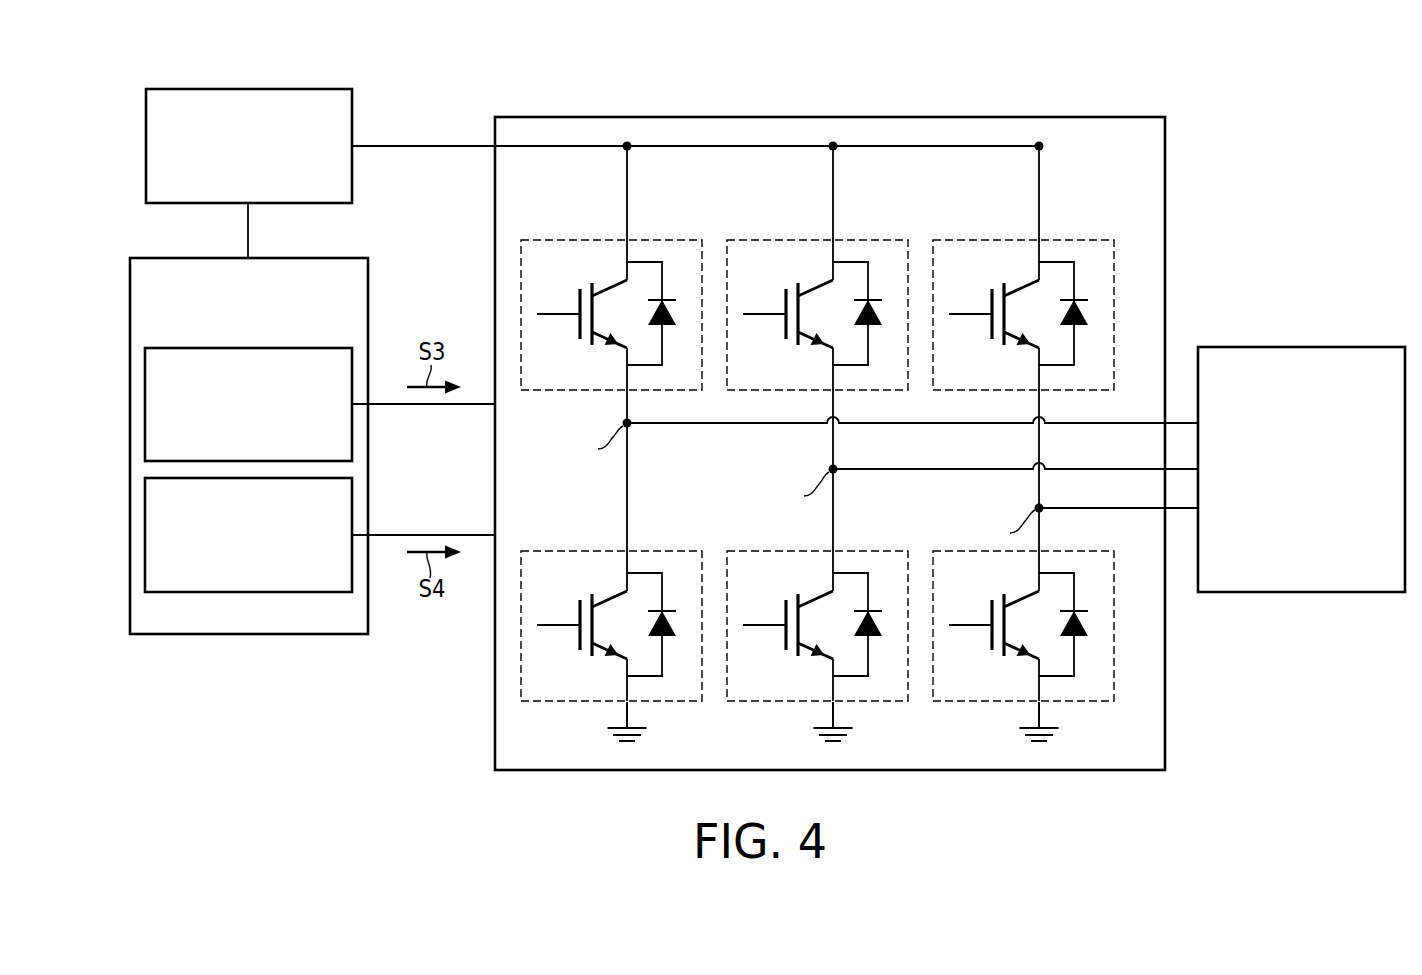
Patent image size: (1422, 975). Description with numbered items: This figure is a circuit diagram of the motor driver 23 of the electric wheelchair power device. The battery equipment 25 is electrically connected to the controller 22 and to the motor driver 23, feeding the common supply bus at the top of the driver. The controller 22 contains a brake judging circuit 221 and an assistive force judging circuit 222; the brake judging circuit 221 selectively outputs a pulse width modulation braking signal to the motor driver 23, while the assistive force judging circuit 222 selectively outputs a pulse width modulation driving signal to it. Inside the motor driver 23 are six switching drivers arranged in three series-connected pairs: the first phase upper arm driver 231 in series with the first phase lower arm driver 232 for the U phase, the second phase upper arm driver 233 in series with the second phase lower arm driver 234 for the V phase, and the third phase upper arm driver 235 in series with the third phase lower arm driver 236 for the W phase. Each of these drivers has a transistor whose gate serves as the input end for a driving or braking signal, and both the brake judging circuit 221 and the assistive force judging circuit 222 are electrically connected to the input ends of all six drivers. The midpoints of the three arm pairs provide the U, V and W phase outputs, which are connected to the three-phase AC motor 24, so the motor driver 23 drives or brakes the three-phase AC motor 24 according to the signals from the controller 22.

The controller 22 is at (165, 258).
The brake judging circuit 221 is at (182, 348).
The assistive force judging circuit 222 is at (181, 592).
The motor driver 23 is at (1165, 152).
The first phase upper arm driver 231 is at (551, 238).
The first phase lower arm driver 232 is at (550, 704).
The second phase upper arm driver 233 is at (757, 238).
The second phase lower arm driver 234 is at (756, 704).
The third phase upper arm driver 235 is at (963, 238).
The third phase lower arm driver 236 is at (962, 704).
The three-phase AC motor 24 is at (1372, 347).
The battery equipment 25 is at (180, 89).